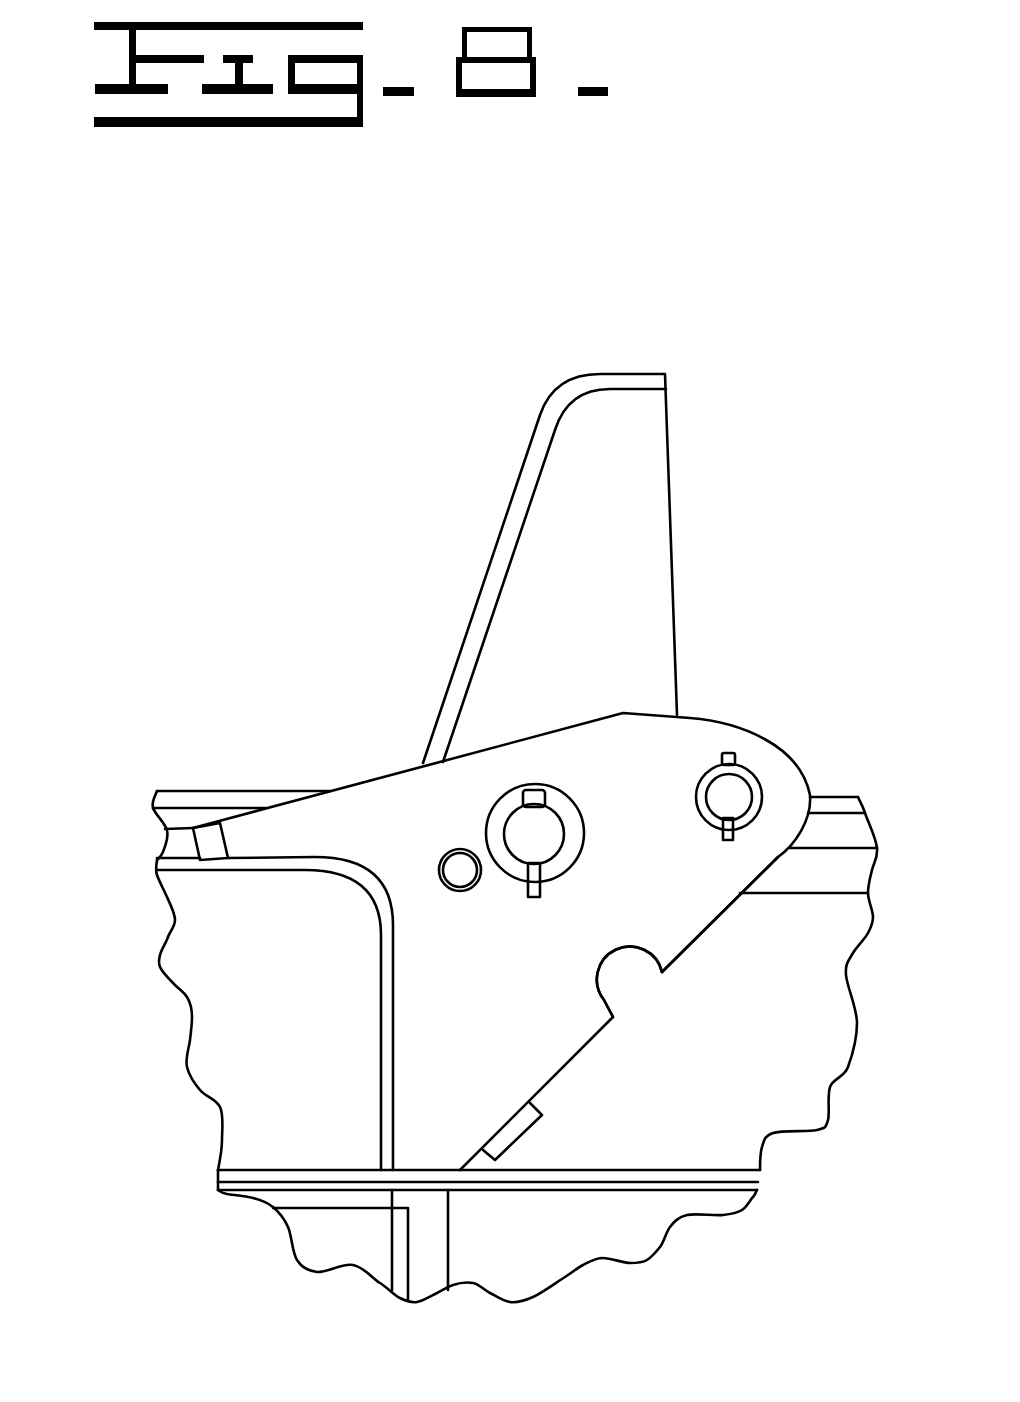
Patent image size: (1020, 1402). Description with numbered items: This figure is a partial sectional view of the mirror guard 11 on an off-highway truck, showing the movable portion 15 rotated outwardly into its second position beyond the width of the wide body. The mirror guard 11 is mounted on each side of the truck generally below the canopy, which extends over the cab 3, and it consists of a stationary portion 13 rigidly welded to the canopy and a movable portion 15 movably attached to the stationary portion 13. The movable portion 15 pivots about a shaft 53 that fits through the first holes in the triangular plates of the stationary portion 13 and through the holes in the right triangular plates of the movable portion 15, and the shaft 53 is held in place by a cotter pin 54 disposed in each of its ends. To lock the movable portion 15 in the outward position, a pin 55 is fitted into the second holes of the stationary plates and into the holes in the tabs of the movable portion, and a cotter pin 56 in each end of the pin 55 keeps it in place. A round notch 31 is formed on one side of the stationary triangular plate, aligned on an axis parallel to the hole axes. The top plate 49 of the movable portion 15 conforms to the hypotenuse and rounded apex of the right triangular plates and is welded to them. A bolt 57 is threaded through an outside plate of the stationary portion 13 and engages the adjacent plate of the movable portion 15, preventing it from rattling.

The cab 3 is at (262, 973).
The mirror guard 11 is at (427, 795).
The stationary portion 13 is at (692, 908).
The movable portion 15 is at (520, 482).
The round notch 31 is at (630, 983).
The top plate 49 is at (475, 608).
The shaft 53 is at (533, 832).
The cotter pin 54 is at (531, 895).
The pin 55 is at (717, 797).
The cotter pin 56 is at (727, 840).
The bolt 57 is at (437, 877).